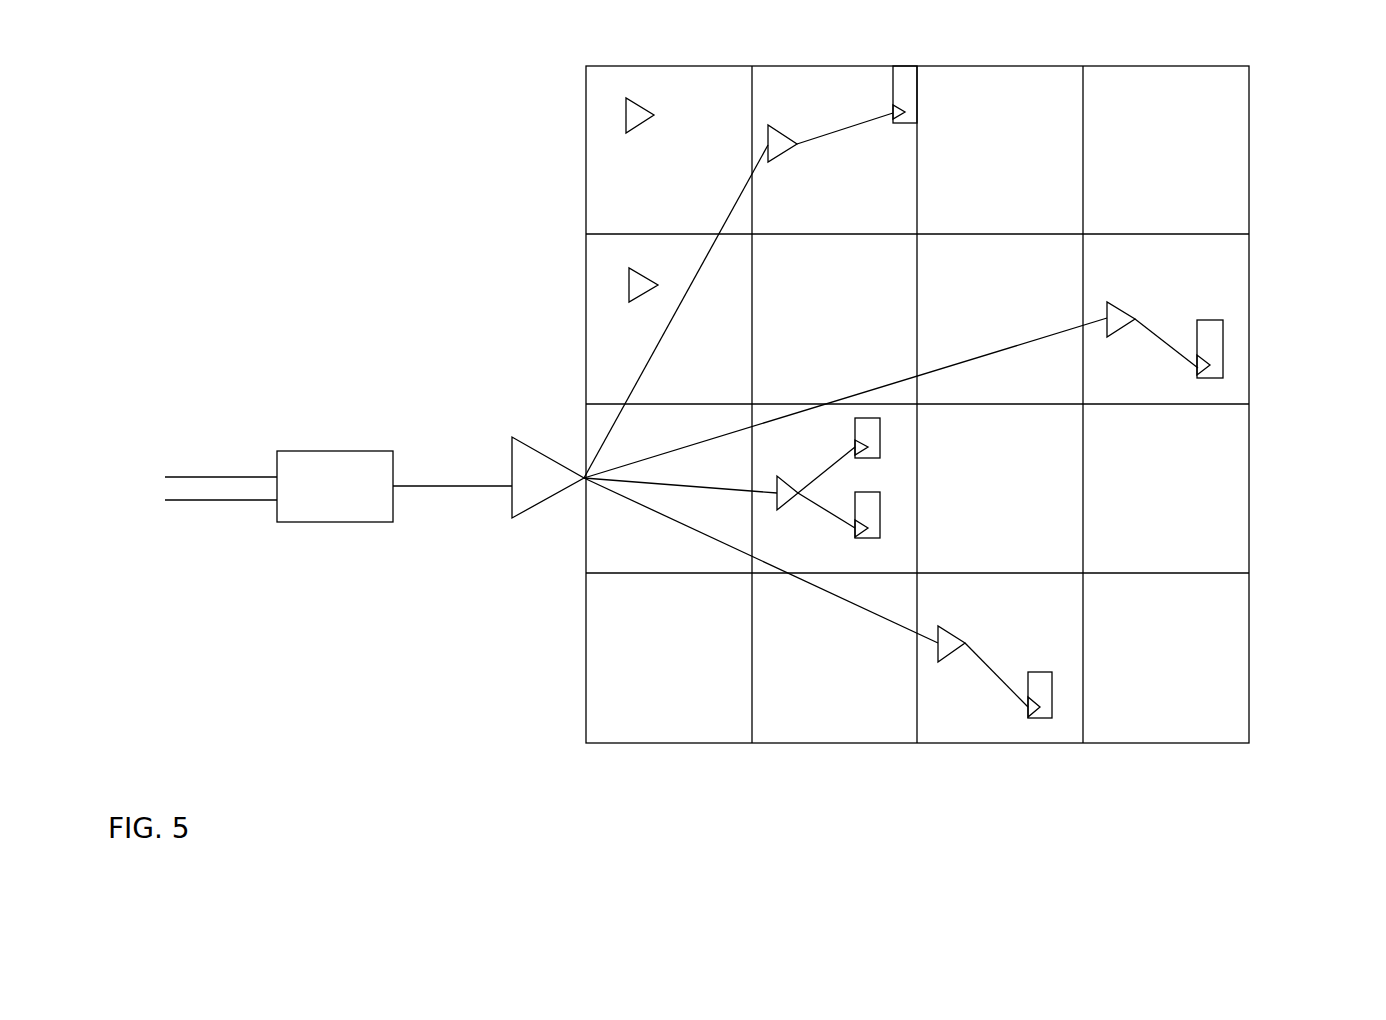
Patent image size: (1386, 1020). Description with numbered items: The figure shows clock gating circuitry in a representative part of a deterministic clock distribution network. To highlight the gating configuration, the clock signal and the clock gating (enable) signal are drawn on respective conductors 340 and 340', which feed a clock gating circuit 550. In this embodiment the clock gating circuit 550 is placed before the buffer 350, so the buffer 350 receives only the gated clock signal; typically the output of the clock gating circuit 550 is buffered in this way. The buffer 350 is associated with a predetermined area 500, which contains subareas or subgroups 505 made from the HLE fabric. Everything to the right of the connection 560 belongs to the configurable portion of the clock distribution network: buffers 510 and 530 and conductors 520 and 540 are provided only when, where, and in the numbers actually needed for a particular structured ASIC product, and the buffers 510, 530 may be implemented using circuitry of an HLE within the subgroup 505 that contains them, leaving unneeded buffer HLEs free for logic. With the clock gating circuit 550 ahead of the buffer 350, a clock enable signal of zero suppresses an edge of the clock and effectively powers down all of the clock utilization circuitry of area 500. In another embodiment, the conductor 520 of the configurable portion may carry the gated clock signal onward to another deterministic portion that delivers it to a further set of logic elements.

The conductor 340 is at (199, 577).
The conductor 340' is at (208, 401).
The buffer 350 is at (525, 495).
The area 500 is at (530, 701).
The subgroup 505 is at (1173, 670).
The buffer 510 is at (642, 283).
The conductor 520 is at (706, 267).
The buffer 530 is at (1162, 340).
The conductor 540 is at (1210, 348).
The clock gating circuit 550 is at (333, 452).
The connection 560 is at (582, 475).